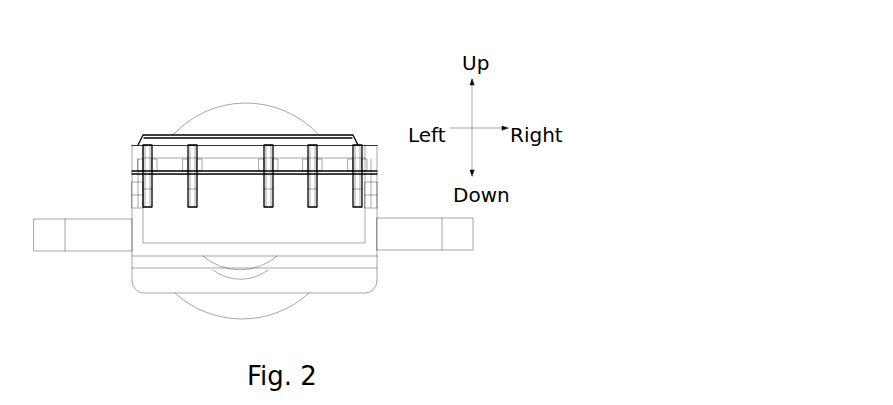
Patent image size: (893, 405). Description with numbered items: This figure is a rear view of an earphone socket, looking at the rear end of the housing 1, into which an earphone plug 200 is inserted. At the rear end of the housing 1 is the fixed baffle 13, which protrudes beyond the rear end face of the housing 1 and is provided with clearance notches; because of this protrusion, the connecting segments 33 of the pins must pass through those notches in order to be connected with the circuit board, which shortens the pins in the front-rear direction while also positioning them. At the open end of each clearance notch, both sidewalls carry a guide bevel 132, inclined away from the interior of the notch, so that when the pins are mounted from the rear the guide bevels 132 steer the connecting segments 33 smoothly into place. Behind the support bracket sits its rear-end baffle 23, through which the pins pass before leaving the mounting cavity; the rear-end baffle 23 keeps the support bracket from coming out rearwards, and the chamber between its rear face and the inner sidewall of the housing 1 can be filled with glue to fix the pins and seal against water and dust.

The housing 1 is at (342, 283).
The fixed baffle 13 is at (168, 165).
The rear-end baffle 23 is at (200, 228).
The connecting segments 33 is at (192, 153).
The guide bevel 132 is at (190, 157).
The earphone plug 200 is at (237, 120).